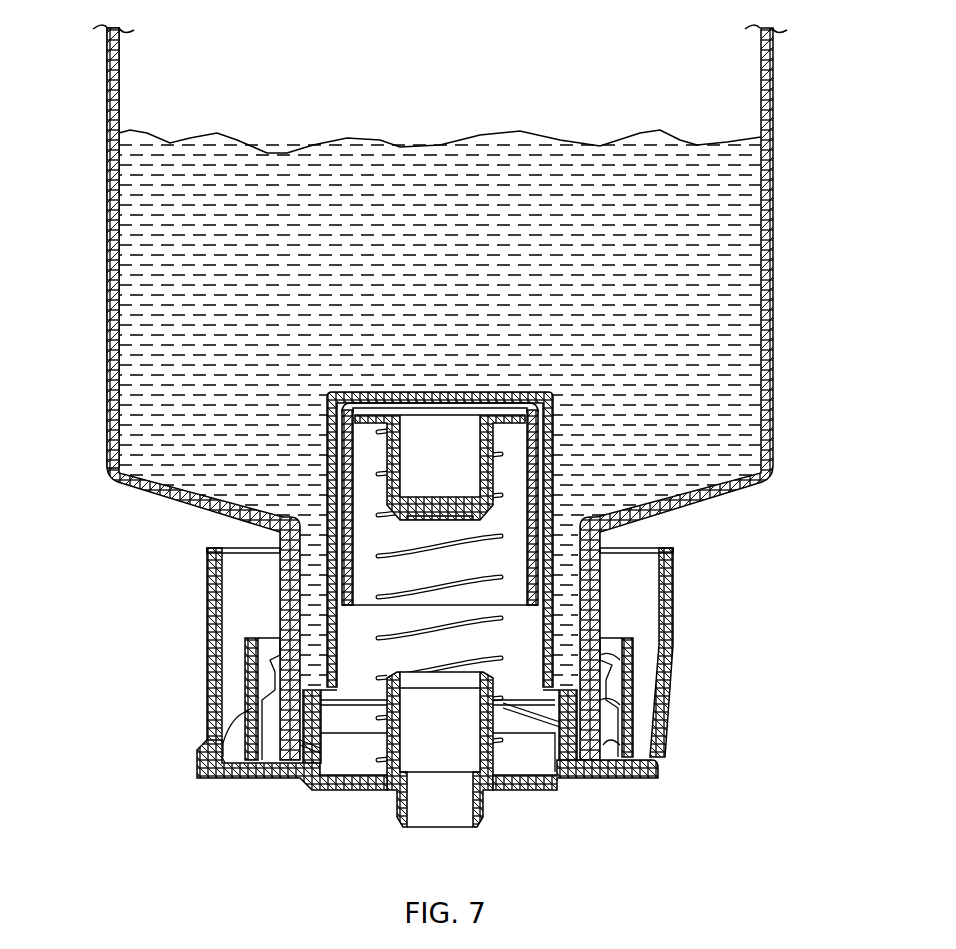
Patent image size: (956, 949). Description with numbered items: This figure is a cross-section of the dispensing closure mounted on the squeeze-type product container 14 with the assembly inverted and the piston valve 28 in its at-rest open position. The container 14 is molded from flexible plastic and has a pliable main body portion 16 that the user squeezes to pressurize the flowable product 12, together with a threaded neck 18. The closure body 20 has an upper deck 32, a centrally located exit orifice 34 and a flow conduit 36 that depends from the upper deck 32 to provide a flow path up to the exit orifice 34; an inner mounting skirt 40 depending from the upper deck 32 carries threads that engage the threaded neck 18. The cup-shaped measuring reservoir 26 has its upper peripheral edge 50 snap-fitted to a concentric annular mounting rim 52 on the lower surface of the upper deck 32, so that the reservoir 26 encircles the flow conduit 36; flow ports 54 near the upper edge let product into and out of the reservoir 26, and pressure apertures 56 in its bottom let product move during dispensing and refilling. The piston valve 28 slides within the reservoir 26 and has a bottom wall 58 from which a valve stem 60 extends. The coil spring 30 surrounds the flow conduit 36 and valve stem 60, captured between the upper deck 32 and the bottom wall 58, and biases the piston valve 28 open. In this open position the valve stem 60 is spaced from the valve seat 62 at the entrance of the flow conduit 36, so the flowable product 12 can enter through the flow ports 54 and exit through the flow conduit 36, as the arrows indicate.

The flowable product 12 is at (745, 175).
The product container 14 is at (100, 210).
The main body portion 16 is at (768, 62).
The threaded neck 18 is at (605, 703).
The closure body 20 is at (690, 571).
The measuring reservoir 26 is at (562, 592).
The piston valve 28 is at (333, 542).
The spring 30 is at (378, 432).
The upper deck 32 is at (593, 775).
The exit orifice 34 is at (408, 820).
The flow conduit 36 is at (378, 742).
The inner mounting skirt 40 is at (627, 680).
The upper peripheral edge 50 is at (315, 745).
The mounting rim 52 is at (318, 745).
The flow ports 54 is at (522, 662).
The pressure apertures 56 is at (375, 392).
The bottom wall 58 is at (287, 428).
The valve stem 60 is at (383, 467).
The valve seat 62 is at (400, 672).